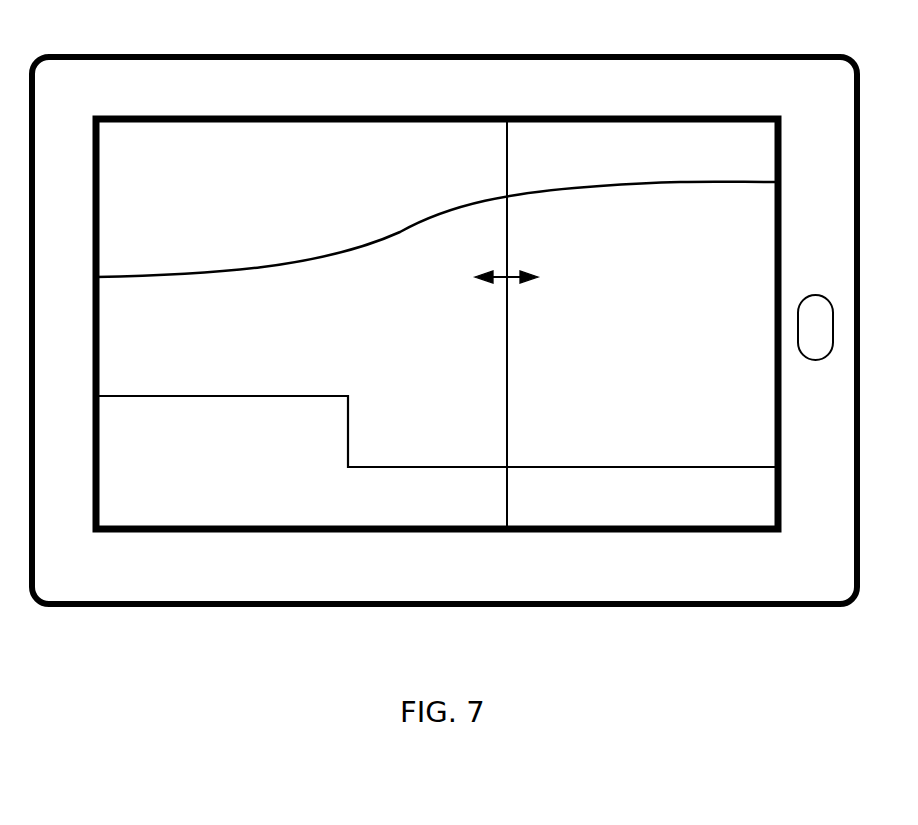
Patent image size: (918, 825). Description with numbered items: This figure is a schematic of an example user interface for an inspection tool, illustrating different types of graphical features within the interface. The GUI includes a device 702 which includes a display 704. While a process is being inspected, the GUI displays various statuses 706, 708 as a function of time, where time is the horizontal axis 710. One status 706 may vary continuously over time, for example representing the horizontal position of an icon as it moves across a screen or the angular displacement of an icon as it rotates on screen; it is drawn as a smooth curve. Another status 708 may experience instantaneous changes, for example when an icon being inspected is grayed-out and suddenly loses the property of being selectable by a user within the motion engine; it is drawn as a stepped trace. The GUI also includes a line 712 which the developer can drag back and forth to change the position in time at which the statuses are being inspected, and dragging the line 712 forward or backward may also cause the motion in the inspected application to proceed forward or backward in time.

The device 702 is at (189, 54).
The display 704 is at (380, 116).
The status 706 is at (320, 257).
The status 708 is at (300, 398).
The horizontal axis 710 is at (348, 533).
The line 712 is at (508, 372).